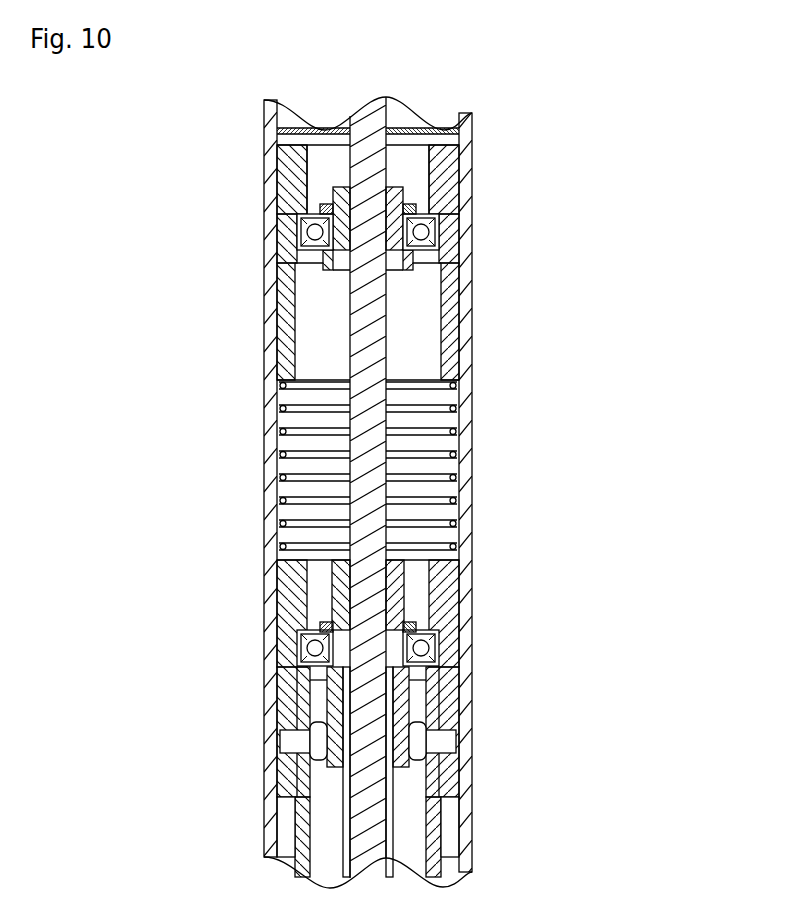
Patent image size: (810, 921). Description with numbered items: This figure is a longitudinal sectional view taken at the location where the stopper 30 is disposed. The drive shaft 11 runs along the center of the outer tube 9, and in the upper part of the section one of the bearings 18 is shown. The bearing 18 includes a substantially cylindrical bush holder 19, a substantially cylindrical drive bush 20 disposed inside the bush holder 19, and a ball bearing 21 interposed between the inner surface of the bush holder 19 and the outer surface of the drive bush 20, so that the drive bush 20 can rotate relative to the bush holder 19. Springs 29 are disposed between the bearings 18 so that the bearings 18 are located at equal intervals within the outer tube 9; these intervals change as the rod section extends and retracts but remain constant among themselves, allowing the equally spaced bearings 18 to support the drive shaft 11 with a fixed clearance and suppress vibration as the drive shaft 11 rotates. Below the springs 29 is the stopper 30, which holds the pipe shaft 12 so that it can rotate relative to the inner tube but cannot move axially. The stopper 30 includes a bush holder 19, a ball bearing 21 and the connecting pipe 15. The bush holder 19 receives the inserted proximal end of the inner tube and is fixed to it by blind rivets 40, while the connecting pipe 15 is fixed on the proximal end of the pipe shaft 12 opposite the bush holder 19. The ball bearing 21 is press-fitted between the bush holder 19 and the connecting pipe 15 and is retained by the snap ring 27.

The outer tube 9 is at (463, 428).
The drive shaft 11 is at (372, 508).
The pipe shaft 12 is at (393, 833).
The connecting pipe 15 is at (405, 622).
The bearing 18 is at (667, 138).
The bush holder 19 is at (455, 330).
The drive bush 20 is at (403, 190).
The ball bearing 21 is at (430, 225).
The snap ring 27 is at (323, 208).
The spring 29 is at (300, 448).
The stopper 30 is at (667, 557).
The blind rivet 40 is at (293, 740).